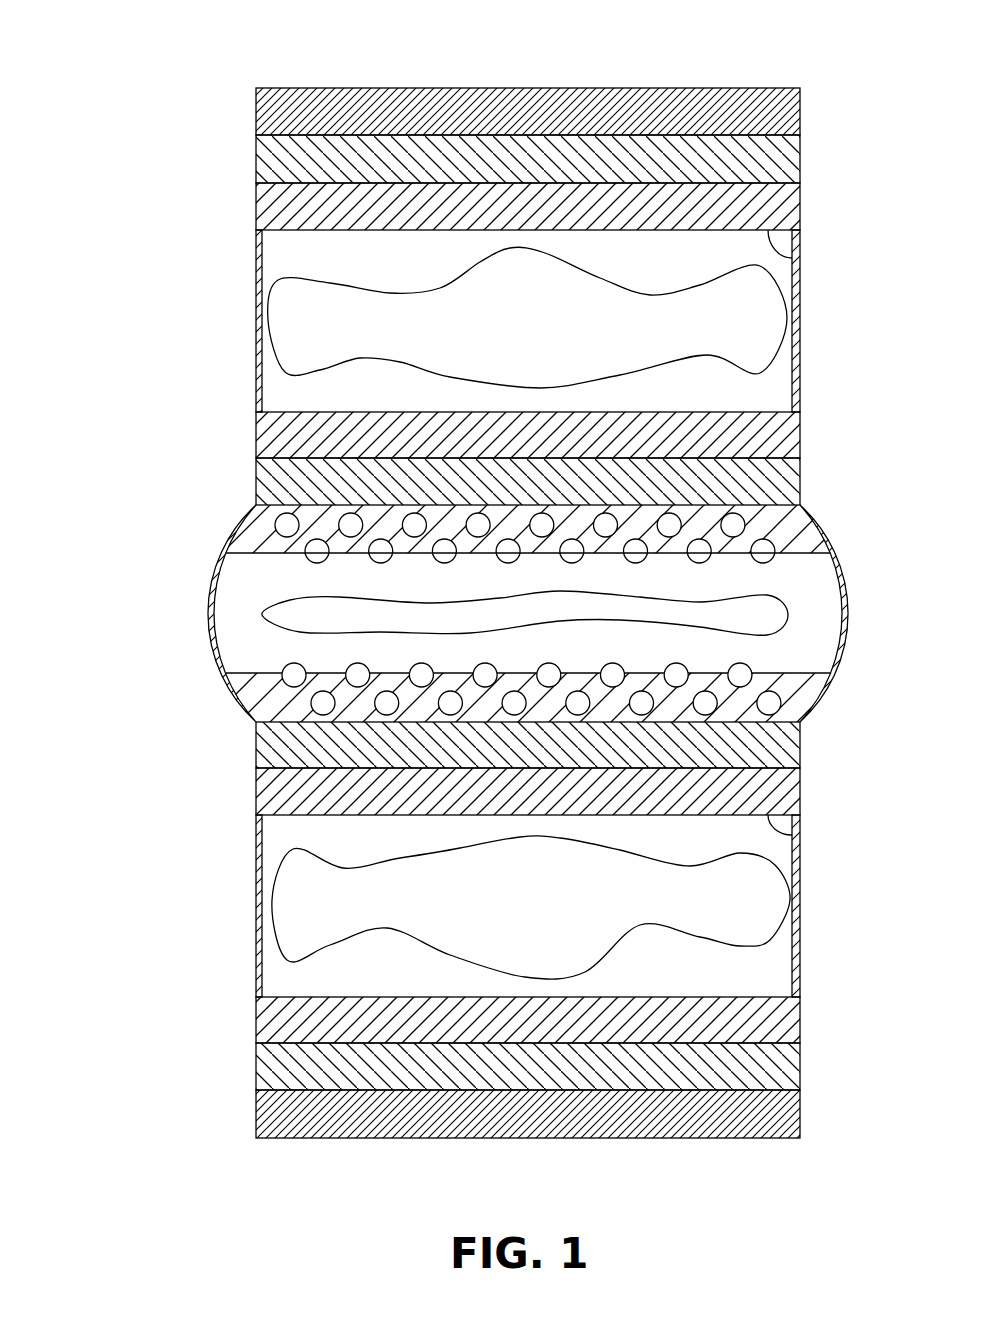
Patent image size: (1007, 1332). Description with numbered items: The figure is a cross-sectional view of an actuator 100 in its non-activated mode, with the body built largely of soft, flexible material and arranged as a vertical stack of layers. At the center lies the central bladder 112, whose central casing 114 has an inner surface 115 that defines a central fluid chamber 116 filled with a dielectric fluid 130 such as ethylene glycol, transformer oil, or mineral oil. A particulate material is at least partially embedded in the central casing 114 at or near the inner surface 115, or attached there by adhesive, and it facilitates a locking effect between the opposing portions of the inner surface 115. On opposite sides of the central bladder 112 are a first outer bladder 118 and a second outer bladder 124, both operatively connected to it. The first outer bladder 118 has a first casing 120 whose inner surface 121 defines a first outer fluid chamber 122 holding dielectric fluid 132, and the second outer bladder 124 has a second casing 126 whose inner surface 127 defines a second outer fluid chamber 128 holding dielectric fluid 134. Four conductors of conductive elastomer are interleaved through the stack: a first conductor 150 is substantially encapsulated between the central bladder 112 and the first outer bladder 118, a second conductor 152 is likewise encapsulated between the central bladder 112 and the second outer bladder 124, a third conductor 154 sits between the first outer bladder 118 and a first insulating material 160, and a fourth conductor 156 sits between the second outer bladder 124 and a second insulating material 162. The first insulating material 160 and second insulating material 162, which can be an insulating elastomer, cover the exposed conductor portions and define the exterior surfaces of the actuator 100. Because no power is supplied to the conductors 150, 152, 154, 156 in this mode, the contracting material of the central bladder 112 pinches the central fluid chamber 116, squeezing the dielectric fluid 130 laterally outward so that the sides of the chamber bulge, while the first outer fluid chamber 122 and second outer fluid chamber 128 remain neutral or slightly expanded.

The actuator 100 is at (503, 573).
The central bladder 112 is at (541, 611).
The central casing 114 is at (848, 585).
The inner surface 115 is at (787, 553).
The central fluid chamber 116 is at (790, 658).
The first outer bladder 118 is at (535, 319).
The first casing 120 is at (785, 212).
The inner surface 121 is at (792, 258).
The first outer fluid chamber 122 is at (780, 390).
The second outer bladder 124 is at (538, 906).
The second casing 126 is at (790, 800).
The inner surface 127 is at (792, 835).
The second outer fluid chamber 128 is at (785, 978).
The dielectric fluid 130 is at (770, 614).
The dielectric fluid 132 is at (770, 320).
The dielectric fluid 134 is at (765, 898).
The first conductor 150 is at (790, 482).
The second conductor 152 is at (797, 750).
The third conductor 154 is at (795, 160).
The fourth conductor 156 is at (790, 1060).
The first insulating material 160 is at (790, 103).
The second insulating material 162 is at (790, 1122).